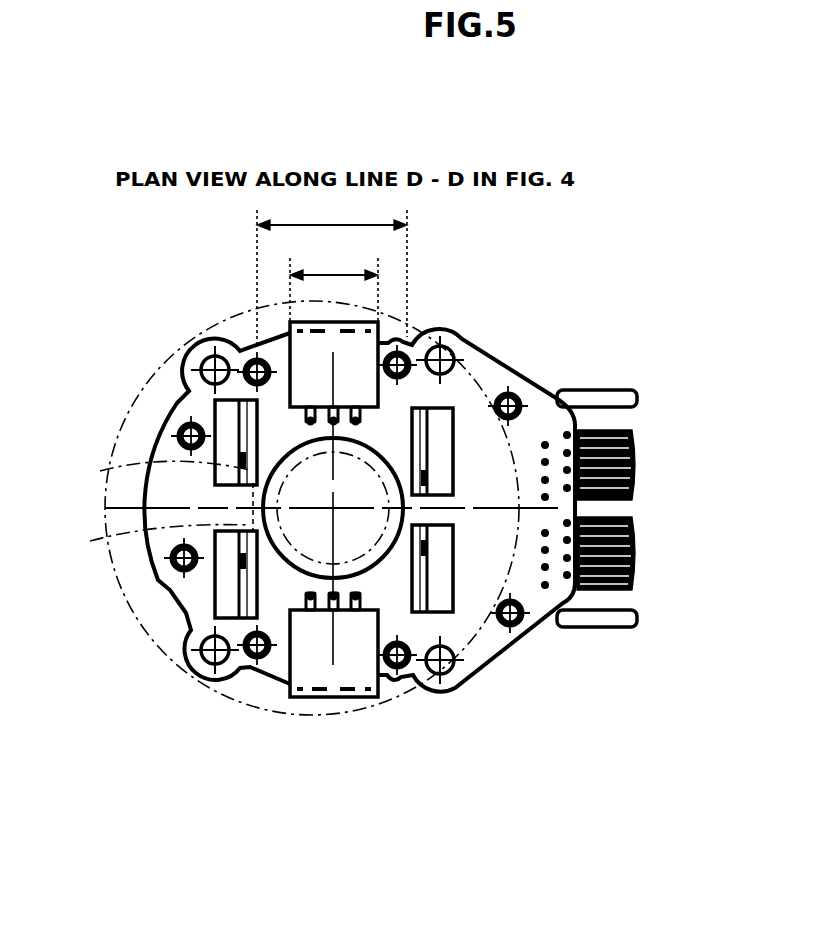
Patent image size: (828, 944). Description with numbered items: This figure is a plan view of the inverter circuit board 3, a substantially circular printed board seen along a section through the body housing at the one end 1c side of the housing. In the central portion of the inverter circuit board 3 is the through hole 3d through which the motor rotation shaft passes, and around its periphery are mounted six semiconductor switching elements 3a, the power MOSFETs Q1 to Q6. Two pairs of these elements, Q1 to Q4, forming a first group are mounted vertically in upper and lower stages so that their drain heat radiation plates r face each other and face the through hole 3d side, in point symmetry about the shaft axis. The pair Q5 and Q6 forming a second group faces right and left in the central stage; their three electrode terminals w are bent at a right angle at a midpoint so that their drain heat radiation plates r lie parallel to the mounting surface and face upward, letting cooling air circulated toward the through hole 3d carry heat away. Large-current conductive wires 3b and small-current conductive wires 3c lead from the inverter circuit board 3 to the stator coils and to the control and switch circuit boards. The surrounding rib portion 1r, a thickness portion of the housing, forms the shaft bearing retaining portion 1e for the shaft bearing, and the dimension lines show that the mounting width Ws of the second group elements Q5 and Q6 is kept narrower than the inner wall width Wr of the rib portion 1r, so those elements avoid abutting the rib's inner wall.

The inverter circuit board 3 is at (454, 333).
The semiconductor switching elements 3a is at (290, 356).
The large-current conductive wires 3b is at (598, 392).
The small-current conductive wires 3c is at (633, 458).
The through hole 3d is at (305, 577).
The one end of the body housing portion 1c is at (112, 420).
The rib portion 1r is at (151, 476).
The shaft bearing retaining portion 1e is at (151, 546).
The inner wall width of the rib portion Wr is at (332, 274).
The mounting width of the second group semiconductor switching elements Ws is at (334, 286).
The heat radiation plate r is at (262, 422).
The electrode terminals w is at (385, 445).